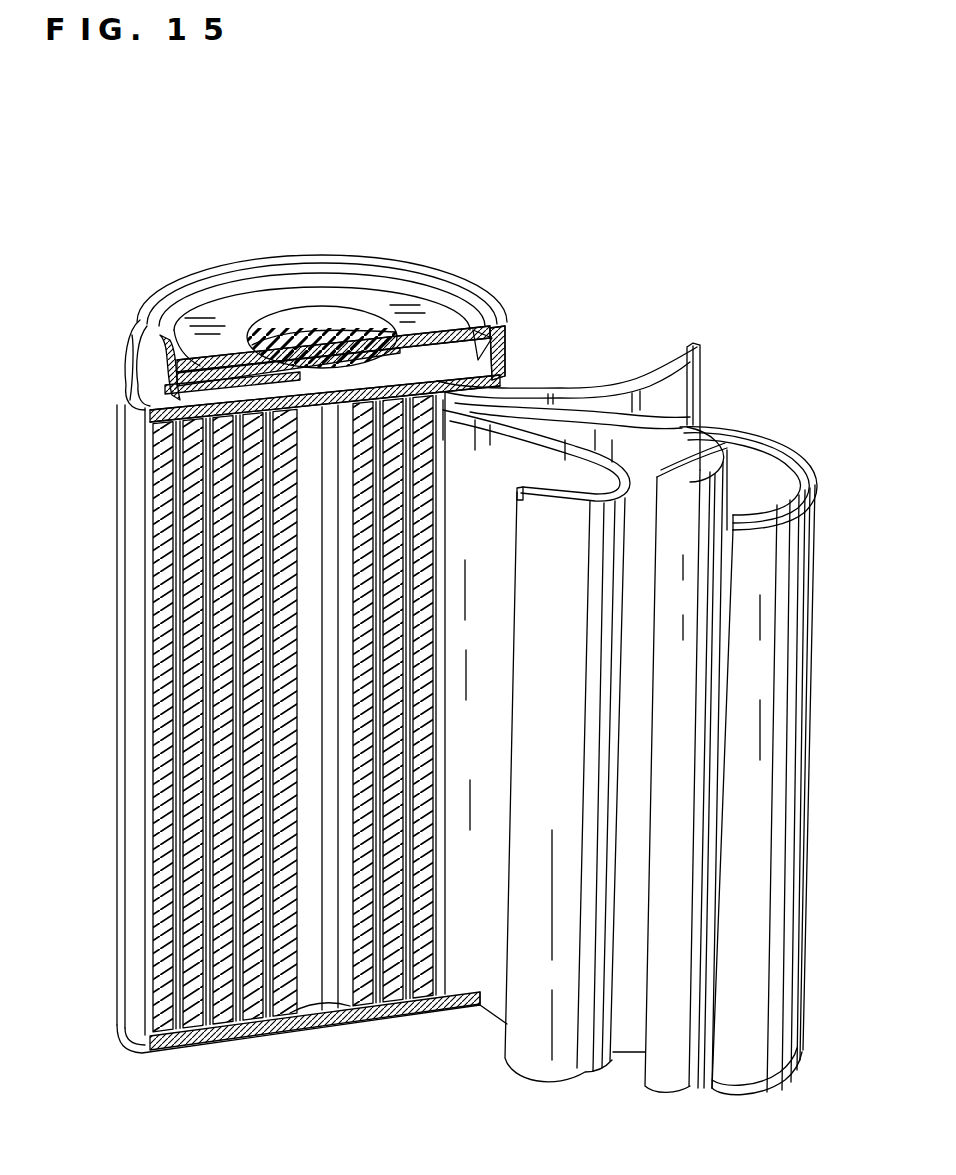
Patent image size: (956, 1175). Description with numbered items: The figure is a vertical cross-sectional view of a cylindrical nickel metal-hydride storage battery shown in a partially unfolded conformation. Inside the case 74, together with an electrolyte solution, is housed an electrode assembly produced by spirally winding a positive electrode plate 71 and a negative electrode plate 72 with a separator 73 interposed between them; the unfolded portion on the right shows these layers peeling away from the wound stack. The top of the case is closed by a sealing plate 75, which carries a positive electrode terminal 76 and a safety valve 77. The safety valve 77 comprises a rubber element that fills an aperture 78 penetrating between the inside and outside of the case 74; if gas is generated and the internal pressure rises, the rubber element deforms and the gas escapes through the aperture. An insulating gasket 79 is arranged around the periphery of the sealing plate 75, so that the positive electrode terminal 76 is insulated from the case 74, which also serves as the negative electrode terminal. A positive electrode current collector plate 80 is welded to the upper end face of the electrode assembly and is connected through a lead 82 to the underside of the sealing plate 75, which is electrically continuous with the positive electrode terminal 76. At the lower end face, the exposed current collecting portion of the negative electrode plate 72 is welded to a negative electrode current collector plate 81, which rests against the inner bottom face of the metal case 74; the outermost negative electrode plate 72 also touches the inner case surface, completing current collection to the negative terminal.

The positive electrode plate 71 is at (795, 645).
The negative electrode plate 72 is at (593, 933).
The separator 73 is at (697, 773).
The case 74 is at (132, 763).
The sealing plate 75 is at (449, 323).
The positive electrode terminal 76 is at (288, 318).
The safety valve 77 is at (309, 347).
The aperture 78 is at (333, 353).
The insulating gasket 79 is at (142, 339).
The positive electrode current collector plate 80 is at (152, 415).
The negative electrode current collector plate 81 is at (280, 1030).
The lead 82 is at (505, 361).